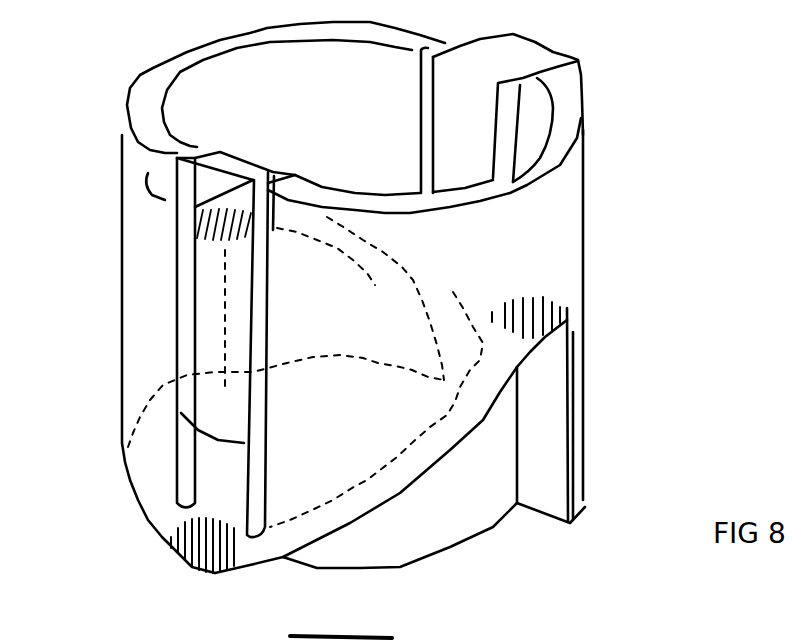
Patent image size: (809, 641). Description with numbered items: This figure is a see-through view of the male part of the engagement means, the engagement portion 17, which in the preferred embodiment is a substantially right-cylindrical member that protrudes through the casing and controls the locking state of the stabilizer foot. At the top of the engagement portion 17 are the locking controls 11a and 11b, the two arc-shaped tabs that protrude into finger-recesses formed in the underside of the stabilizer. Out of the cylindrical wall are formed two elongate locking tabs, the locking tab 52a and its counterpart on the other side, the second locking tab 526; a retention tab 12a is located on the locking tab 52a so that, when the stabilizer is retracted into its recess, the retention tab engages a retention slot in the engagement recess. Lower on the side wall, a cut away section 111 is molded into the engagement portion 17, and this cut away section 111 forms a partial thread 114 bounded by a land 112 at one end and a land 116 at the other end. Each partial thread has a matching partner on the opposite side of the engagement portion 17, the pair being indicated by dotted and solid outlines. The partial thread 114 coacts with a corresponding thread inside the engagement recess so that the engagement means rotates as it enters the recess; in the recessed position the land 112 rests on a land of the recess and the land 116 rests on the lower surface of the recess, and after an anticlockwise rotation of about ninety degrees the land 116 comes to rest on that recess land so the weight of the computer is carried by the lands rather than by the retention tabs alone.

The engagement portion 17 is at (598, 470).
The locking control 11a is at (173, 163).
The locking control 11b is at (523, 53).
The rib 526 is at (447, 160).
The locking tab 52a is at (258, 313).
The retention tab 12a is at (198, 414).
The cut away section 111 is at (470, 508).
The land 112 is at (557, 305).
The partial thread 114 is at (265, 547).
The land 116 is at (190, 553).